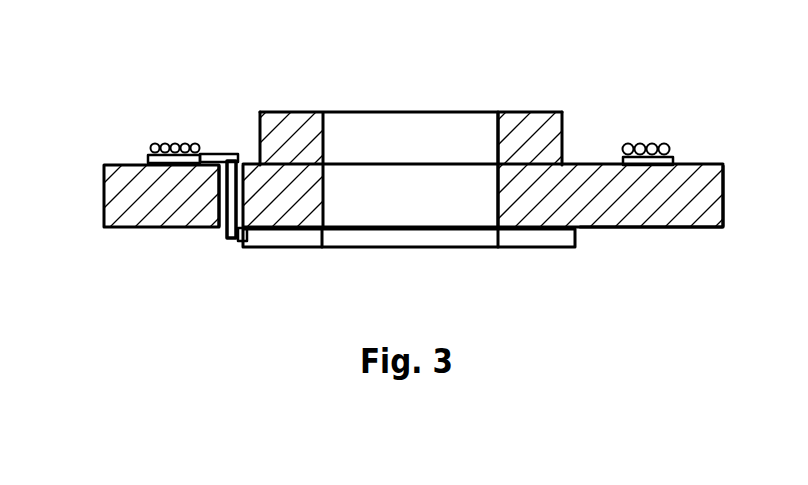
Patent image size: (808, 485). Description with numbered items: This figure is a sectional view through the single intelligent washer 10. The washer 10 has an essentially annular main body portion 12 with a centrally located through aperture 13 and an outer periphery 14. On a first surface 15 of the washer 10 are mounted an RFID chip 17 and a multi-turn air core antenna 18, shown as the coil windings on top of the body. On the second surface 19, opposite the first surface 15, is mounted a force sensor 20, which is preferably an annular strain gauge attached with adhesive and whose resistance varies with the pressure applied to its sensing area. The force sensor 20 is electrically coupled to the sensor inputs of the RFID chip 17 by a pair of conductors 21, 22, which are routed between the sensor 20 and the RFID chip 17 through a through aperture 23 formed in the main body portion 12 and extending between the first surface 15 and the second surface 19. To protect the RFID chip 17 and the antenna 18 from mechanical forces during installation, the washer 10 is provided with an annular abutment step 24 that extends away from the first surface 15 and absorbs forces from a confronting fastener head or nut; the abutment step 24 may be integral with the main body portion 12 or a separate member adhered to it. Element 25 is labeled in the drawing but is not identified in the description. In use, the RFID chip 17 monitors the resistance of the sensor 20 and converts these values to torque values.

The washer 10 is at (410, 95).
The main body portion 12 is at (716, 186).
The through aperture 13 is at (495, 197).
The outer periphery 14 is at (102, 167).
The first surface 15 is at (580, 166).
The RFID chip 17 is at (220, 152).
The multi-turn air core antenna 18 is at (637, 148).
The second surface 19 is at (677, 230).
The force sensor 20 is at (543, 243).
The conductor 21 is at (223, 233).
The conductor 22 is at (228, 243).
The through aperture 23 is at (225, 230).
The annular abutment step 24 is at (510, 122).
The inner wall 25 is at (495, 150).